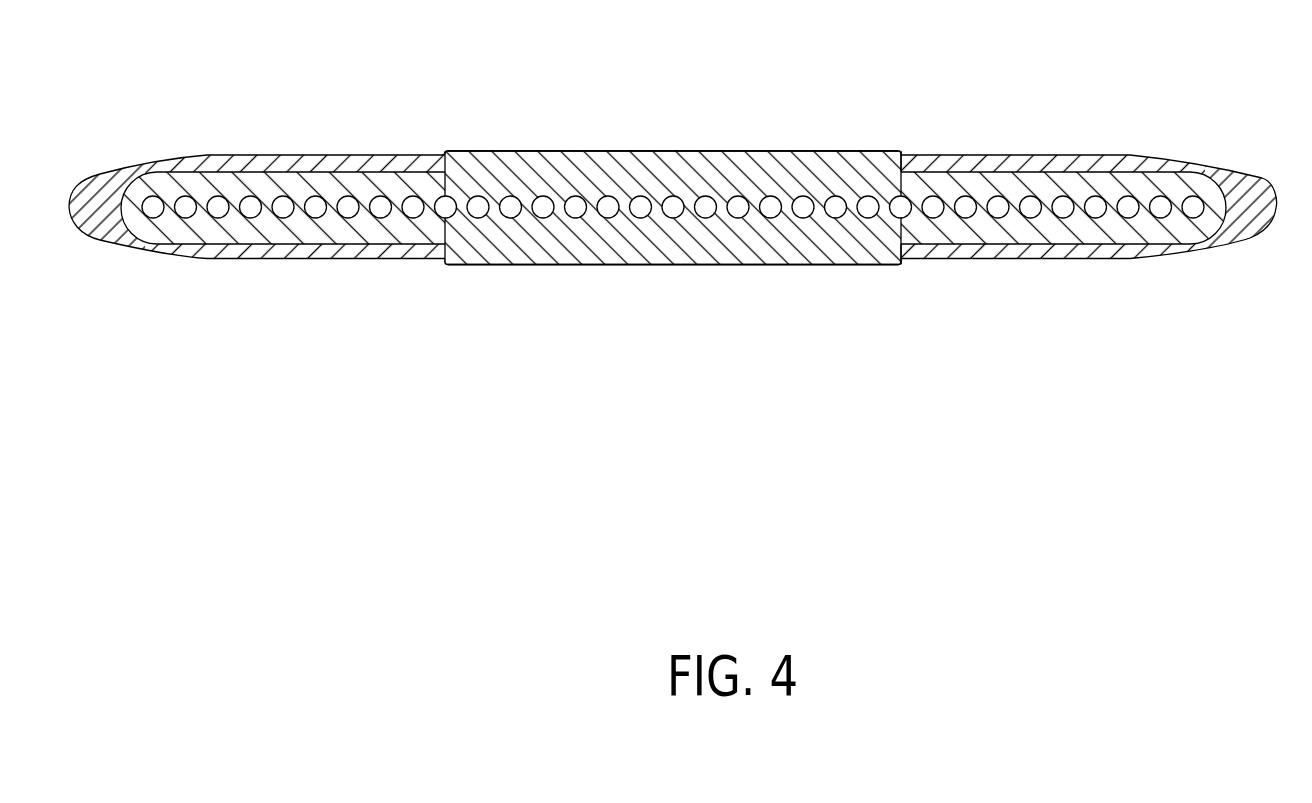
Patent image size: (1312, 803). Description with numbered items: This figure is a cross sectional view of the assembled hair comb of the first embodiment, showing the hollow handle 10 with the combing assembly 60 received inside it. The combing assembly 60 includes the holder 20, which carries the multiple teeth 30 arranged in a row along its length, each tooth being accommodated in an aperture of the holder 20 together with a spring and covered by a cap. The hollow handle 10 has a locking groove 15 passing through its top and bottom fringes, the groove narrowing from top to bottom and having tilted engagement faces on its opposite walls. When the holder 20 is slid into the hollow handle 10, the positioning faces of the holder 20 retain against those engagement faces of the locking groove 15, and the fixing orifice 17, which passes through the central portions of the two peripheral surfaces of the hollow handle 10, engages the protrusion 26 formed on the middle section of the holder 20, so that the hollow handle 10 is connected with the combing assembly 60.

The hollow handle 10 is at (686, 204).
The locking groove 15 is at (1056, 172).
The fixing orifice 17 is at (901, 157).
The holder 20 is at (1128, 158).
The protrusion 26 is at (672, 150).
The teeth 30 is at (511, 219).
The combing assembly 60 is at (462, 148).